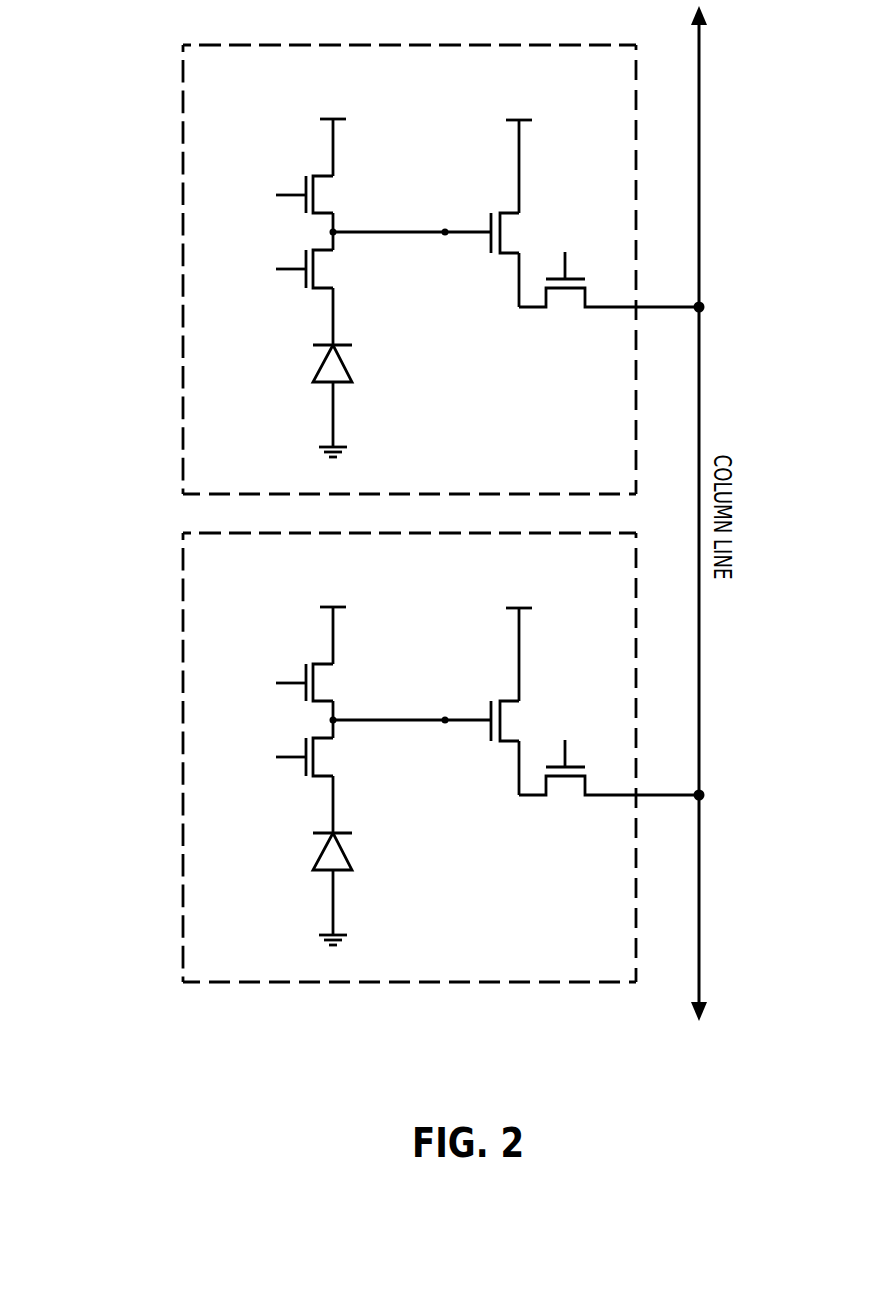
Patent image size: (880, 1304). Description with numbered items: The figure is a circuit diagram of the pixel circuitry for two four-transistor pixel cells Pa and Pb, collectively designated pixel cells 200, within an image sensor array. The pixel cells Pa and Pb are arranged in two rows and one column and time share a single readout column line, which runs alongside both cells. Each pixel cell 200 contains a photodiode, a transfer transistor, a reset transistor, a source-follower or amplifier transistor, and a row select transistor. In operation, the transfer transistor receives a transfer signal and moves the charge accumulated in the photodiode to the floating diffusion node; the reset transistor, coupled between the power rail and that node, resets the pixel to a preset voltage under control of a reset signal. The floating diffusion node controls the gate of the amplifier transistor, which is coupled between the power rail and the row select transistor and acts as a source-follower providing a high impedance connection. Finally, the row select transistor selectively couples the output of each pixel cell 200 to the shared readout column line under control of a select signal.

The pixel cells 200 is at (393, 510).
The pixel cell Pa is at (278, 74).
The pixel cell Pb is at (409, 757).